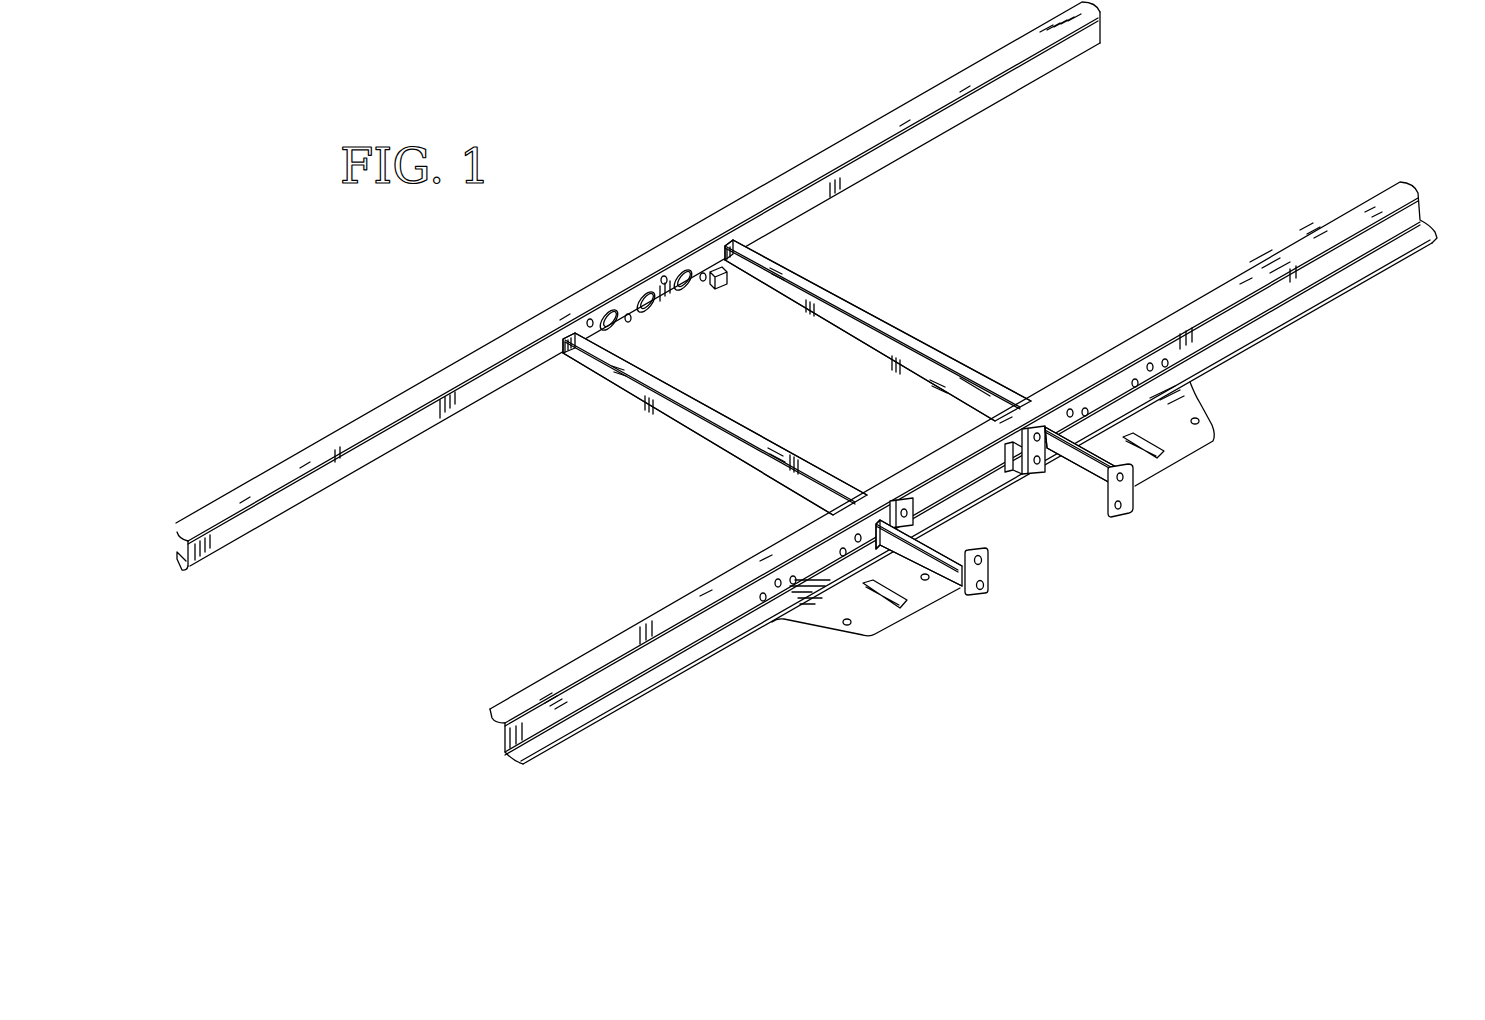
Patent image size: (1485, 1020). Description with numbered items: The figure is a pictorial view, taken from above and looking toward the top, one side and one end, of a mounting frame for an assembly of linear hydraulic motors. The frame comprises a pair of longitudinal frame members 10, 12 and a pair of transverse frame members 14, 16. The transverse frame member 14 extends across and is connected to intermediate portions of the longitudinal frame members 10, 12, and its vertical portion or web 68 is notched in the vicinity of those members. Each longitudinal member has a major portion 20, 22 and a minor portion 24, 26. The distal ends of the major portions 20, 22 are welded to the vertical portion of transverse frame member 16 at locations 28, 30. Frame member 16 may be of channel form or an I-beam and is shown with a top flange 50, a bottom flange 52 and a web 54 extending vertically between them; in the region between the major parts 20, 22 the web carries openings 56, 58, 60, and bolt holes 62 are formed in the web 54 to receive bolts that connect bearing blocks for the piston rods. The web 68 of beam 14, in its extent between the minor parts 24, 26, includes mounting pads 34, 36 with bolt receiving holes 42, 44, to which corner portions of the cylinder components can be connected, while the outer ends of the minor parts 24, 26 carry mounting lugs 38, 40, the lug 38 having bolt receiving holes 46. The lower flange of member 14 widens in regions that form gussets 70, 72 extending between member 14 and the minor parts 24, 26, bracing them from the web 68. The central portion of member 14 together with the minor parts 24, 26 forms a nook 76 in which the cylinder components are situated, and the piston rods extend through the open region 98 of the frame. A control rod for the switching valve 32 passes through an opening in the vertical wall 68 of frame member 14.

The longitudinal frame member 10 is at (806, 406).
The longitudinal frame member 12 is at (878, 329).
The transverse frame member 14 is at (963, 493).
The transverse frame member 16 is at (638, 319).
The major portion 20 is at (699, 424).
The major portion 22 is at (878, 329).
The minor portion 24 is at (925, 562).
The minor portion 26 is at (1192, 402).
The distal end / weld location 28 is at (558, 357).
The distal end / weld location 30 is at (714, 265).
The switching valve 32 is at (940, 555).
The mounting pad 34 is at (894, 502).
The mounting pad 36 is at (1022, 434).
The mounting lug 38 is at (968, 600).
The mounting lug 40 is at (1138, 484).
The bolt receiving hole 42 is at (908, 513).
The bolt receiving hole 44 is at (1038, 432).
The bolt receiving hole 46 is at (1122, 507).
The top flange 50 is at (293, 467).
The bottom flange 52 is at (183, 572).
The web 54 is at (288, 500).
The opening 56 is at (607, 318).
The opening 58 is at (642, 297).
The opening 60 is at (588, 720).
The bolt holes 62 is at (588, 322).
The web 68 is at (663, 655).
The gusset 70 is at (832, 615).
The gusset 72 is at (1213, 440).
The nook 76 is at (1040, 506).
The open region 98 is at (893, 385).